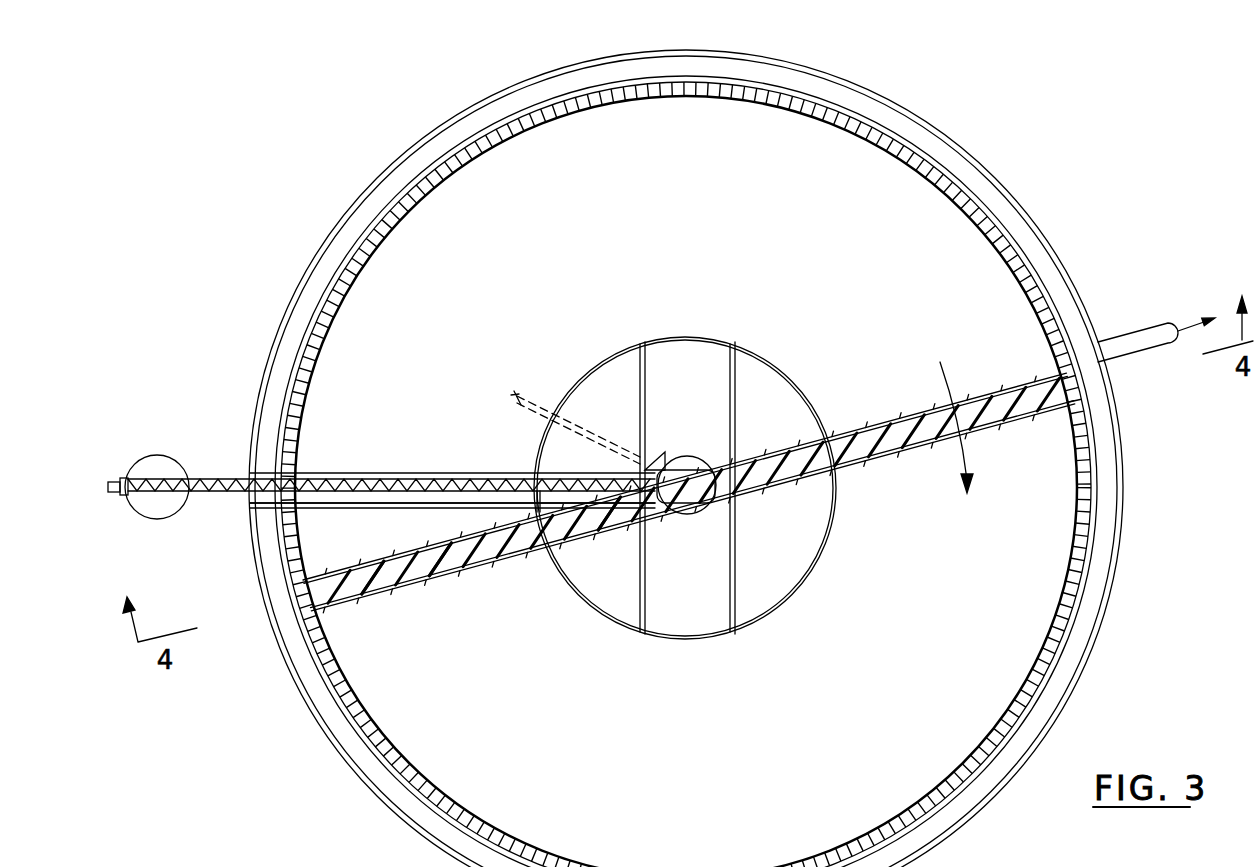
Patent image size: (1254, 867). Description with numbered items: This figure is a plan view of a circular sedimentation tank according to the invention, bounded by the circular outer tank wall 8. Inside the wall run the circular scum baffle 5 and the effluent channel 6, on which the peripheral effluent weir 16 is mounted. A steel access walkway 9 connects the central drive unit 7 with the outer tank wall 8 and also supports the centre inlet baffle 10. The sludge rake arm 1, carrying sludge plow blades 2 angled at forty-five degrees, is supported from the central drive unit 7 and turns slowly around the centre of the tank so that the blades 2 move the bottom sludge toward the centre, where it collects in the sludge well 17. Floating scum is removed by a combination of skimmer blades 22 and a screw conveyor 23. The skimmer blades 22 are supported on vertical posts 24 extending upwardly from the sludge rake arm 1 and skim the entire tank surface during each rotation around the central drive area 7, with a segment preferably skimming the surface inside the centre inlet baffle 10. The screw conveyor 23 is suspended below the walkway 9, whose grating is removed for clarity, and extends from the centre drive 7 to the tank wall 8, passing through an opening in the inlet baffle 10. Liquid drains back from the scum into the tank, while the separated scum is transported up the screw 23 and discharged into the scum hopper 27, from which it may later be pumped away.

The sludge rake arm 1 is at (396, 599).
The sludge plow blade 2 is at (488, 557).
The circular scum baffle 5 is at (355, 703).
The effluent channel 6 is at (276, 561).
The central drive unit 7 is at (690, 458).
The outer tank wall 8 is at (1047, 244).
The access walkway 9 is at (441, 471).
The centre inlet baffle 10 is at (762, 355).
The peripheral effluent weir 16 is at (302, 397).
The sludge well 17 is at (537, 396).
The skimmer blade 22 is at (362, 566).
The screw conveyor 23 is at (328, 507).
The vertical post 24 is at (422, 563).
The scum hopper 27 is at (140, 461).